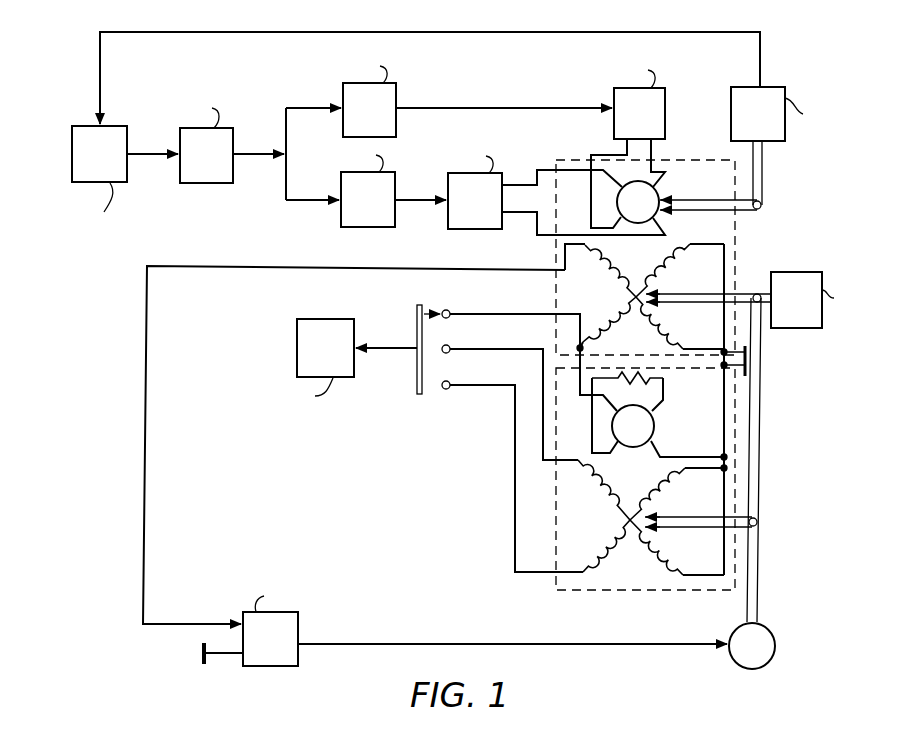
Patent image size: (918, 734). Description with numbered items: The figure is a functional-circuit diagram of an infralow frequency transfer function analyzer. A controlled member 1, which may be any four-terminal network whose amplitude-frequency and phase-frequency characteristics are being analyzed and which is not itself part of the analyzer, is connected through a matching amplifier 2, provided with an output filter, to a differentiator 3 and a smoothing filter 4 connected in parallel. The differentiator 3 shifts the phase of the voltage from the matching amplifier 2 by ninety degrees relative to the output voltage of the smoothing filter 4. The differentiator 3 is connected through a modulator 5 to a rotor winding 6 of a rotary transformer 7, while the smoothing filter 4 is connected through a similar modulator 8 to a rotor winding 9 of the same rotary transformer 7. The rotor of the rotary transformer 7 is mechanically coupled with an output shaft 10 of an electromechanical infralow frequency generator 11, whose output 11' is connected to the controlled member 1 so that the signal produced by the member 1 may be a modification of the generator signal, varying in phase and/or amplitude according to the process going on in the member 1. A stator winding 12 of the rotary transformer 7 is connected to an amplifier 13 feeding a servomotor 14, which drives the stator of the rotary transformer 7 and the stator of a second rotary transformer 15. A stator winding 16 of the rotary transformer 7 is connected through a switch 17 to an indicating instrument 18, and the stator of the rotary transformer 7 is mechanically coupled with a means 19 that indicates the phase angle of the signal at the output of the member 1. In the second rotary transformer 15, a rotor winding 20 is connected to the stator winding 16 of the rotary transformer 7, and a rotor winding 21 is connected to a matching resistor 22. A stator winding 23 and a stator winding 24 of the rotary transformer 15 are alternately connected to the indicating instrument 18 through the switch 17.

The controlled member 1 is at (99, 179).
The matching amplifier 2 is at (253, 149).
The differentiator 3 is at (470, 97).
The smoothing filter 4 is at (385, 187).
The modulator 5 is at (628, 145).
The rotor winding 6 is at (616, 221).
The rotary transformer 7 is at (740, 262).
The modulator 8 is at (551, 191).
The rotor winding 9 is at (615, 177).
The output shaft 10 is at (768, 179).
The electromechanical infralow frequency generator 11 is at (790, 114).
The output of the generator 11' is at (787, 63).
The stator winding 12 is at (602, 254).
The amplifier 13 is at (465, 626).
The servomotor 14 is at (735, 630).
The rotary transformer 15 is at (740, 410).
The stator winding 16 is at (673, 258).
The switch 17 is at (415, 310).
The indicating instrument 18 is at (334, 362).
The phase angle indicating means 19 is at (826, 302).
The rotor winding 20 is at (602, 403).
The rotor winding 21 is at (661, 404).
The matching resistor 22 is at (614, 382).
The stator winding 23 is at (592, 483).
The stator winding 24 is at (673, 485).